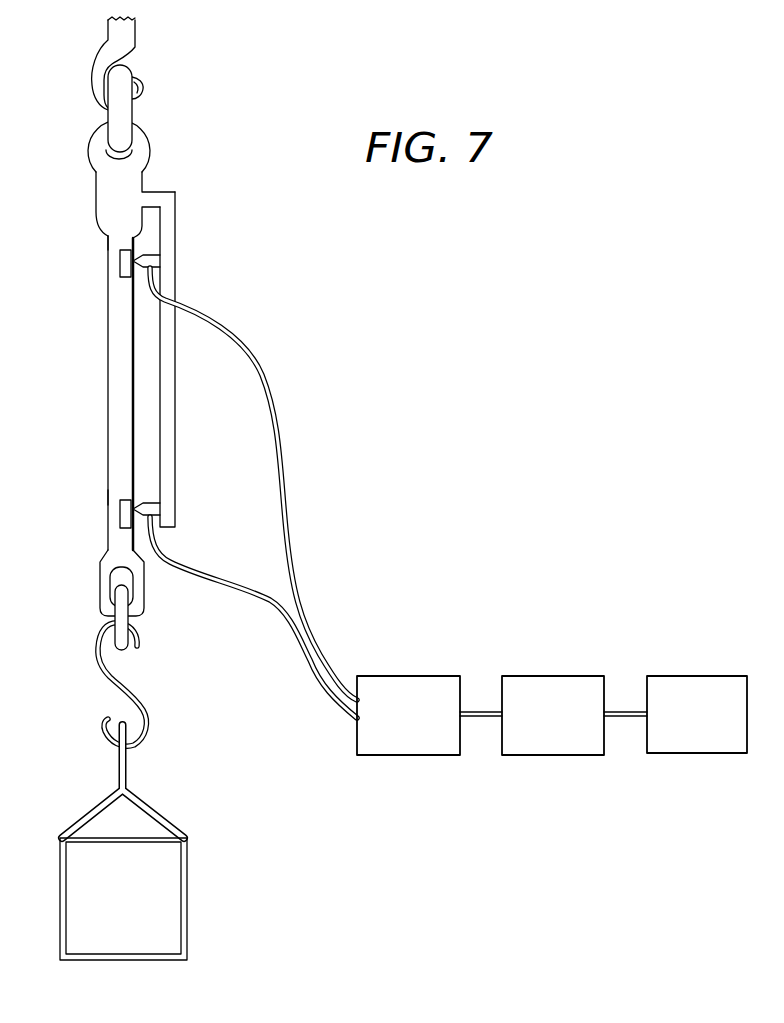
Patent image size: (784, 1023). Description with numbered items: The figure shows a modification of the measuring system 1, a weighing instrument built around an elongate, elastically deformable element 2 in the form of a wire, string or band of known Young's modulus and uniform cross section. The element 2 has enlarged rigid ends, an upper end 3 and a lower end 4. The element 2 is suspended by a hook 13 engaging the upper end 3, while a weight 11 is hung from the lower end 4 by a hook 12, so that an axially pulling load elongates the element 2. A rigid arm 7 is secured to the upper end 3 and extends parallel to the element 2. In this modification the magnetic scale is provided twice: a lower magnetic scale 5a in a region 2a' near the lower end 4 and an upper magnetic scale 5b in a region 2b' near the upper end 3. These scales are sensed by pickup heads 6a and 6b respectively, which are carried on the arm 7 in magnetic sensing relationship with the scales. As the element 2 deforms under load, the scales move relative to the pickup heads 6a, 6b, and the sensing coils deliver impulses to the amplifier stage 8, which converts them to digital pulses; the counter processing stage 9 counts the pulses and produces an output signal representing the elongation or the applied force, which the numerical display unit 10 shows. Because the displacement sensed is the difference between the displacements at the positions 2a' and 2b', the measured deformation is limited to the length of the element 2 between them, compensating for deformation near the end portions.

The measuring system 1 is at (214, 188).
The elongate elastically deformable element 2 is at (115, 388).
The region near the lower end 2a' is at (89, 504).
The region near the upper end 2b' is at (89, 241).
The upper rigid end 3 is at (103, 185).
The lower rigid end 4 is at (103, 568).
The lower magnetic scale 5a is at (118, 516).
The upper magnetic scale 5b is at (120, 265).
The lower pickup head 6a is at (147, 500).
The upper pickup head 6b is at (152, 252).
The rigid arm 7 is at (172, 393).
The amplifier stage 8 is at (430, 683).
The counter processing stage 9 is at (572, 683).
The numerical display unit 10 is at (708, 688).
The weight 11 is at (170, 865).
The hook 12 is at (137, 698).
The hook 13 is at (123, 40).